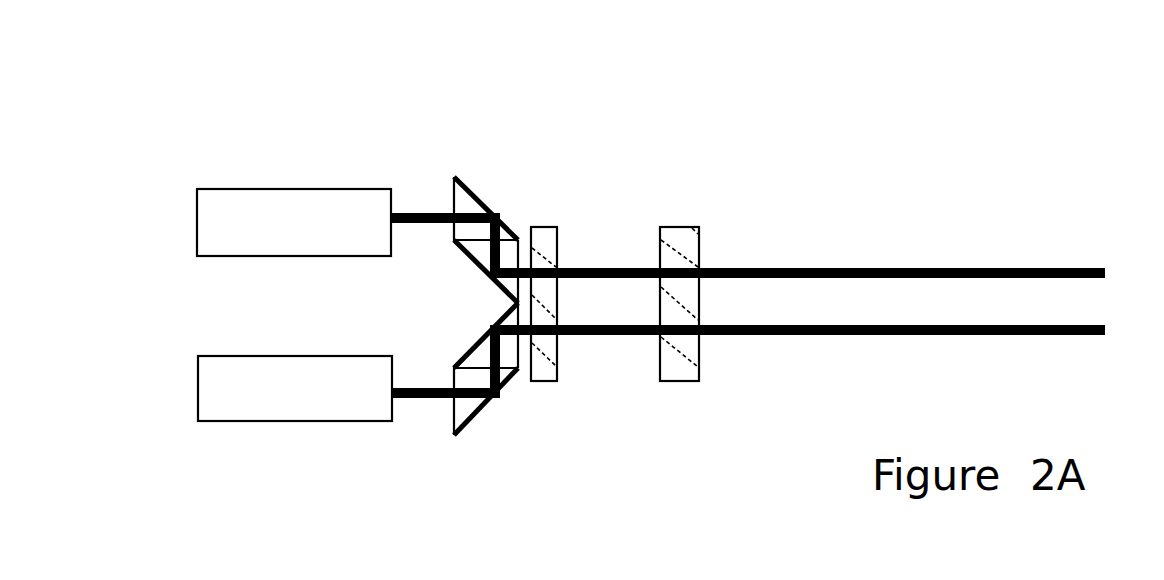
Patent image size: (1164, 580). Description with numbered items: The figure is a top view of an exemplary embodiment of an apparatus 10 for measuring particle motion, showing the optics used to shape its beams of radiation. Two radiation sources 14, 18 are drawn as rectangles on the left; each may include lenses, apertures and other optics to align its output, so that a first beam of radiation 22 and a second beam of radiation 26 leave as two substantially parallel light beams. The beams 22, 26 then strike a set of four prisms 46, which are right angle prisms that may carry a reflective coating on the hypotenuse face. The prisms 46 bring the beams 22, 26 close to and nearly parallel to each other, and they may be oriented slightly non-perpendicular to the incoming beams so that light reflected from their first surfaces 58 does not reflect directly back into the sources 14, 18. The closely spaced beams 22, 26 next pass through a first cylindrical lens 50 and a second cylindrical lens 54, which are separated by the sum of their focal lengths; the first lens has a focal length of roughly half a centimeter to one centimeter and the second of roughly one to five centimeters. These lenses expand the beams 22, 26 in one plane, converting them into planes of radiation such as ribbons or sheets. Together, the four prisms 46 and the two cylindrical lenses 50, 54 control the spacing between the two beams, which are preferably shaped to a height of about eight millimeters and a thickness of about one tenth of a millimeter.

The apparatus for measuring particle motion 10 is at (618, 150).
The radiation source 14 is at (245, 422).
The radiation source 18 is at (275, 188).
The first beam of radiation 22 is at (412, 397).
The second beam of radiation 26 is at (408, 213).
The prisms 46 is at (477, 188).
The first cylindrical lens 50 is at (545, 381).
The second cylindrical lens 54 is at (677, 381).
The first surfaces 58 is at (446, 195).